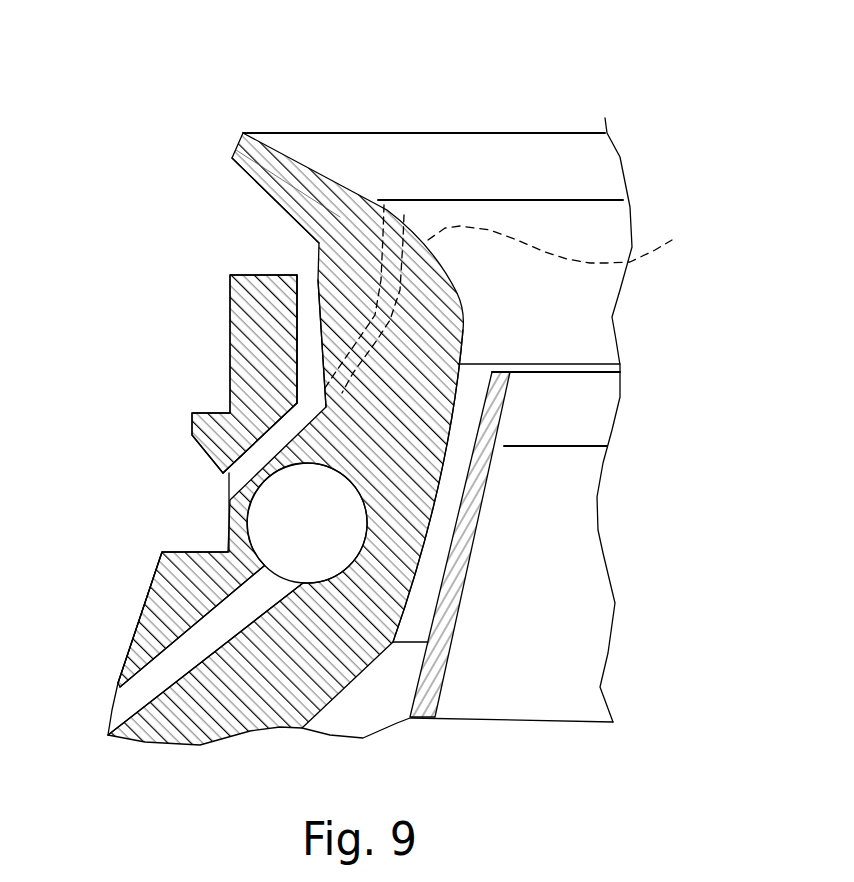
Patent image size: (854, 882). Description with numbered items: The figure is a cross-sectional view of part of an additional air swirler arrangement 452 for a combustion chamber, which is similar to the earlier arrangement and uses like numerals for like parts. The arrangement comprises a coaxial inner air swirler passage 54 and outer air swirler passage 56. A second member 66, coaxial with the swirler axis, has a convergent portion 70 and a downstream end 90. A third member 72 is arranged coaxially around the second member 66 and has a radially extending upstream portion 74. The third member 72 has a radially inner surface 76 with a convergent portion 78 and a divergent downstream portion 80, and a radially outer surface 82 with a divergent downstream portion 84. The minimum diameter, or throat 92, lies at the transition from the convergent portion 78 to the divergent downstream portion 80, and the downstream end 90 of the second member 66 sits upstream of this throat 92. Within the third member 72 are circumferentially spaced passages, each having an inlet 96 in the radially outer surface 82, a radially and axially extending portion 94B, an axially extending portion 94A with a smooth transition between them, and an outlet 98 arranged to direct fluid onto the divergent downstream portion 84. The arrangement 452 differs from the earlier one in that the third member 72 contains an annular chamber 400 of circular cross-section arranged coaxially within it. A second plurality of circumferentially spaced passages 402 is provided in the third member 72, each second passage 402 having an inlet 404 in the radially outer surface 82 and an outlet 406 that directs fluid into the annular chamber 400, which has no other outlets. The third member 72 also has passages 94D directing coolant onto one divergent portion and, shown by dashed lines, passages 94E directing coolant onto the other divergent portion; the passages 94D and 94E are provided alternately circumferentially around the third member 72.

The inner air swirler passage 54 is at (545, 645).
The outer air swirler passage 56 is at (554, 565).
The second member 66 is at (508, 704).
The convergent portion 70 is at (481, 561).
The third member 72 is at (202, 374).
The radially extending upstream portion 74 is at (135, 643).
The radially inner surface 76 is at (583, 420).
The convergent portion 78 is at (554, 486).
The divergent downstream portion 80 is at (285, 407).
The radially outer surface 82 is at (202, 374).
The divergent downstream portion 84 is at (236, 198).
The downstream end 90 is at (586, 336).
The throat 92 is at (546, 249).
The axially extending portion 94A is at (199, 335).
The radially and axially extending portion 94B is at (199, 438).
The passages 94D is at (575, 240).
The passages 94E is at (214, 343).
The inlet 96 is at (199, 512).
The outlet 98 is at (346, 231).
The annular chamber 400 is at (565, 544).
The second passages 402 is at (87, 617).
The inlet 404 is at (152, 659).
The outlet 406 is at (151, 608).
The air swirler arrangement 452 is at (505, 412).